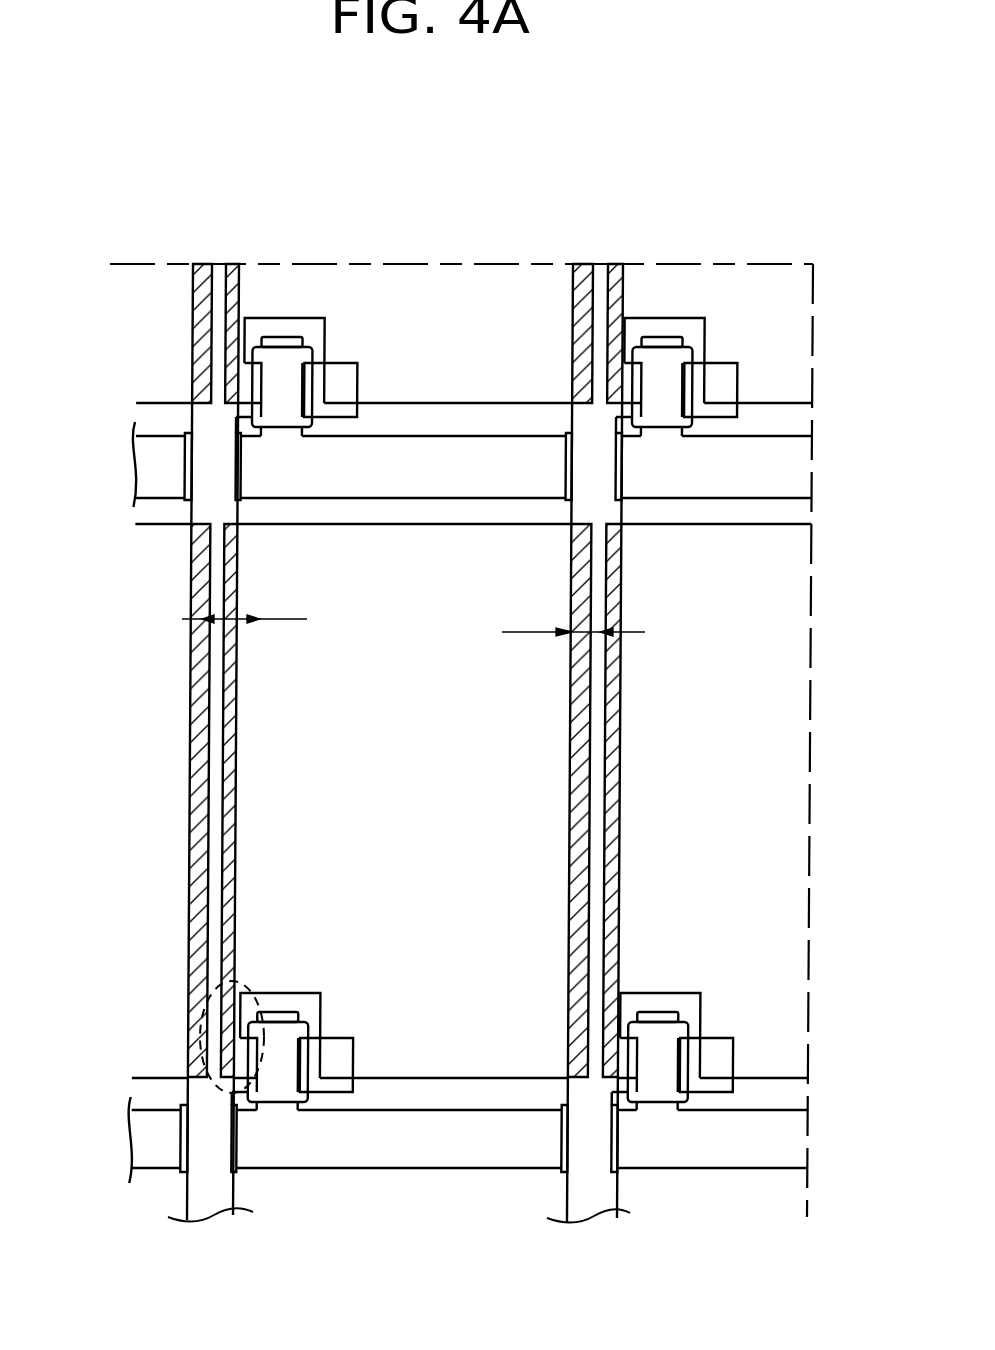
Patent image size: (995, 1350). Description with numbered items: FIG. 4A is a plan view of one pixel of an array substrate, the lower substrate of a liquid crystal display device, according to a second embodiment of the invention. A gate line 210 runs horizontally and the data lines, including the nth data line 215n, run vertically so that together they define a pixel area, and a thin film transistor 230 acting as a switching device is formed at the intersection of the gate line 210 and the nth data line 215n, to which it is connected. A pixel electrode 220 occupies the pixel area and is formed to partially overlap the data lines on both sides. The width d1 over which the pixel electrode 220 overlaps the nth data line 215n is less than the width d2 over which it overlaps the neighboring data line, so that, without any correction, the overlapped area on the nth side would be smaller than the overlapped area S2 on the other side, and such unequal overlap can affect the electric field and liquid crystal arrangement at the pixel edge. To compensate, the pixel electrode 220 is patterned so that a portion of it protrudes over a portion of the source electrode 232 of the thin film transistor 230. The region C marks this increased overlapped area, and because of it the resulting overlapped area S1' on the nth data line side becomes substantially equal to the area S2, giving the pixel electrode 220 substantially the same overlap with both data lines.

The gate line 210 is at (413, 1138).
The pixel electrode 220 is at (480, 1050).
The nth data line 215n is at (200, 1196).
The thin film transistor 230 is at (280, 1072).
The source electrode 232 is at (243, 1072).
The region C is at (252, 975).
The area S1' is at (280, 670).
The area S2 is at (577, 722).
The width d1 is at (244, 605).
The width d2 is at (573, 618).